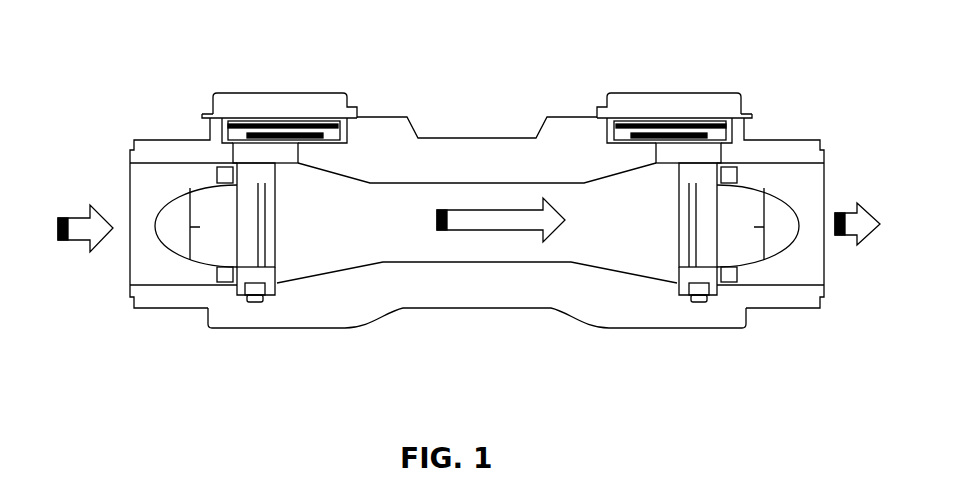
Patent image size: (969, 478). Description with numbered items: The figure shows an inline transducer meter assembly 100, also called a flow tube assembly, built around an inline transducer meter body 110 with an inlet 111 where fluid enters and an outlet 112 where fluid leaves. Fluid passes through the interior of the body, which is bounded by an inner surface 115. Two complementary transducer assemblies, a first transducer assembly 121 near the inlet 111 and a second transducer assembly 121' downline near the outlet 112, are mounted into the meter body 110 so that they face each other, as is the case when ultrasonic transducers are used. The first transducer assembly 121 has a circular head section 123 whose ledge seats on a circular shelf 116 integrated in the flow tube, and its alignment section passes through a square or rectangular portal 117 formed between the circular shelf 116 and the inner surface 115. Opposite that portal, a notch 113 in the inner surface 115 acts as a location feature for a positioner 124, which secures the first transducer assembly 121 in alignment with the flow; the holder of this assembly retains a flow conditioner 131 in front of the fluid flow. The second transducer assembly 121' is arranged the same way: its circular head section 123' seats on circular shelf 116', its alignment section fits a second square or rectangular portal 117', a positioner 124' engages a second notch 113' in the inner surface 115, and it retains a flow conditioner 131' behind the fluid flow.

The inline transducer meter assembly 100 is at (506, 41).
The inline transducer meter body 110 is at (492, 160).
The inlet 111 is at (173, 152).
The outlet 112 is at (780, 145).
The notch 113 is at (273, 276).
The second notch 113' is at (725, 278).
The inner surface 115 is at (412, 195).
The circular shelf 116 is at (310, 179).
The circular shelf 116' is at (651, 179).
The square or rectangular portal 117 is at (284, 192).
The second square or rectangular portal 117' is at (672, 192).
The first transducer assembly 121 is at (285, 79).
The second transducer assembly 121' is at (693, 90).
The circular head section 123 is at (279, 79).
The circular head section 123' is at (674, 77).
The positioner 124 is at (236, 336).
The positioner 124' is at (684, 328).
The flow conditioner 131 is at (146, 240).
The flow conditioner 131' is at (818, 240).